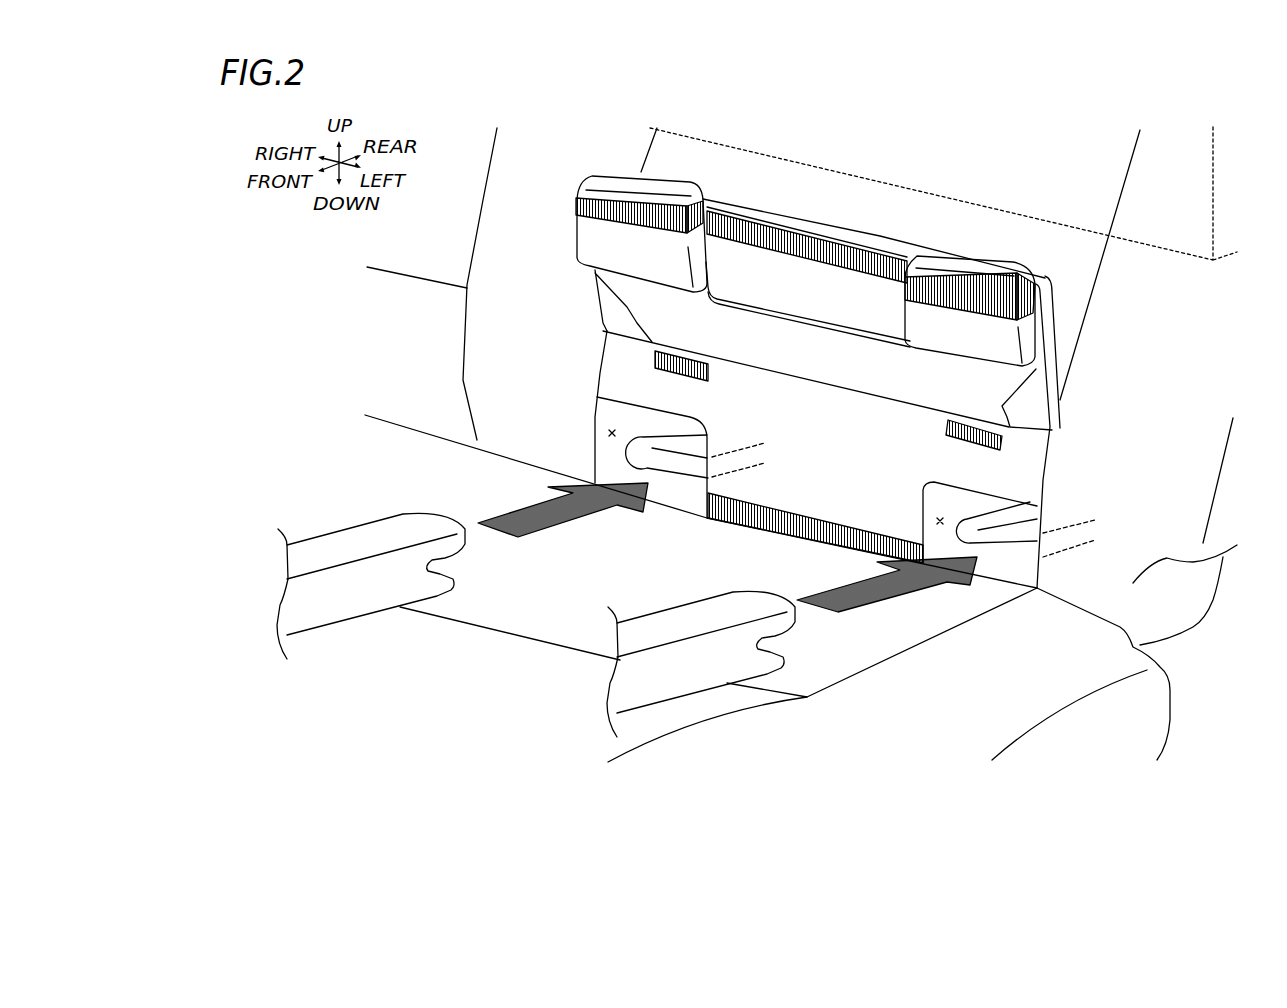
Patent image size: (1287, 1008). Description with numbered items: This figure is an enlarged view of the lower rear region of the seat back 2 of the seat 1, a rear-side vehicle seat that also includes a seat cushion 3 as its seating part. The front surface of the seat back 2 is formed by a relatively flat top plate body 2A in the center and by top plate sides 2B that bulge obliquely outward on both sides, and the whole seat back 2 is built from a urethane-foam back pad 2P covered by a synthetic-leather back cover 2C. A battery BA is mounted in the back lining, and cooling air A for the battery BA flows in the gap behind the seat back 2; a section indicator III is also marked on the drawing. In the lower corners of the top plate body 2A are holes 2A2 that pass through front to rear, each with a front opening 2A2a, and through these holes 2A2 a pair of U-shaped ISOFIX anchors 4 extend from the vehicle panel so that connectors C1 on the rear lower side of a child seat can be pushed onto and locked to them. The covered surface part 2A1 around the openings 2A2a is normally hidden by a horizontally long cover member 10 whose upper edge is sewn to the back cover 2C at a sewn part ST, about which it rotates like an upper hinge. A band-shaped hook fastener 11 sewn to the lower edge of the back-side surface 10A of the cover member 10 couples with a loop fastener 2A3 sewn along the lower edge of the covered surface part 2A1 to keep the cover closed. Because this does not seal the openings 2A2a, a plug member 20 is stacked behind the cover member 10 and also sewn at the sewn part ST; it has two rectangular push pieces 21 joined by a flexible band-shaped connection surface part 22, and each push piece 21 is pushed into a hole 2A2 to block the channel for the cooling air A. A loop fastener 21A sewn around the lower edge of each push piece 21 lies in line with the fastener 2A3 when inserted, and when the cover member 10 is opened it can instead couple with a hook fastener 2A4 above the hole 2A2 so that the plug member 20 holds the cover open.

The seat 1 is at (333, 348).
The seat back 2 is at (1199, 462).
The top plate body 2A is at (849, 205).
The top plate sides 2B is at (533, 219).
The back cover 2C is at (1188, 487).
The back pad 2P is at (1182, 512).
The covered surface part 2A1 is at (783, 493).
The holes 2A2 is at (610, 433).
The opening 2A2a is at (776, 477).
The hook-and-loop fastener (loop surface) 2A3 is at (823, 524).
The hook-and-loop fastener (hook) 2A4 is at (657, 364).
The seat cushion 3 is at (1139, 727).
The ISOFIX anchors 4 is at (668, 440).
The cover member 10 is at (729, 211).
The back-side surface 10A is at (882, 300).
The hook-and-loop fastener (hook surface) 11 is at (797, 233).
The plug member 20 is at (1029, 333).
The push pieces 21 is at (602, 250).
The hook-and-loop fastener (loop surface) 21A is at (613, 211).
The connection surface part 22 is at (853, 373).
The cooling air A is at (543, 140).
The section line III is at (1003, 223).
The battery BA is at (1084, 215).
The connectors C1 is at (347, 539).
The sewn part ST is at (806, 383).